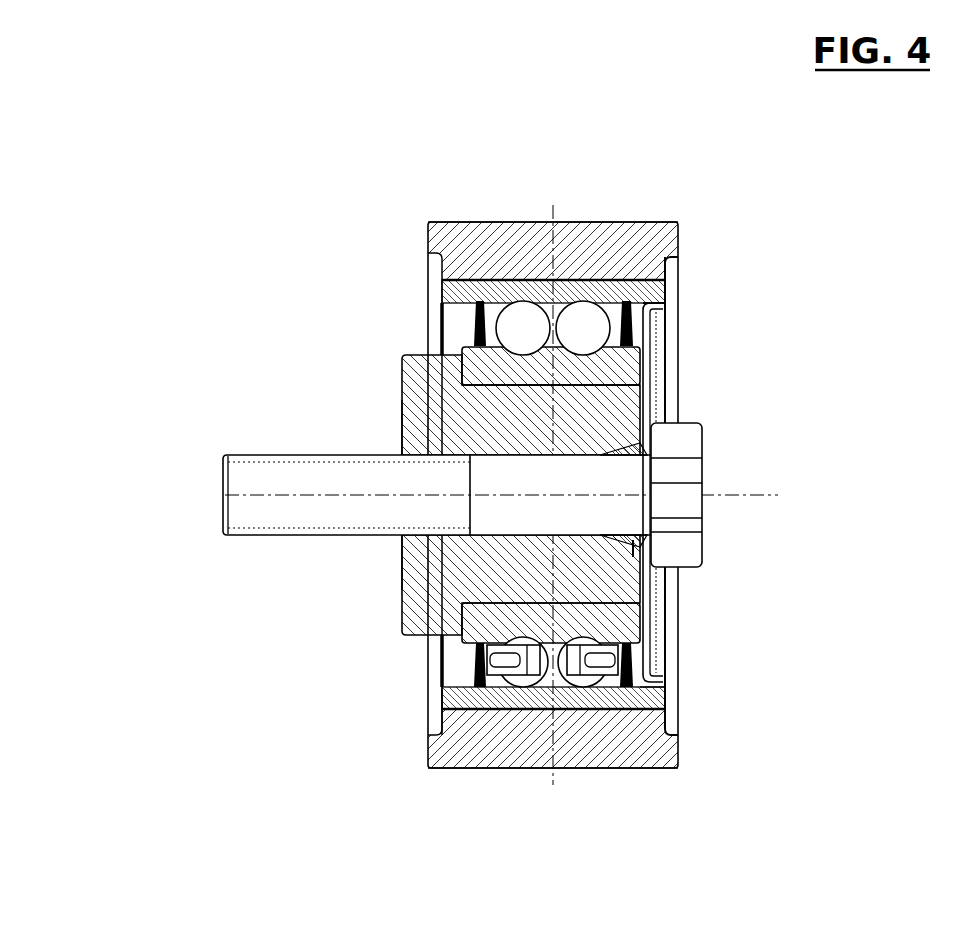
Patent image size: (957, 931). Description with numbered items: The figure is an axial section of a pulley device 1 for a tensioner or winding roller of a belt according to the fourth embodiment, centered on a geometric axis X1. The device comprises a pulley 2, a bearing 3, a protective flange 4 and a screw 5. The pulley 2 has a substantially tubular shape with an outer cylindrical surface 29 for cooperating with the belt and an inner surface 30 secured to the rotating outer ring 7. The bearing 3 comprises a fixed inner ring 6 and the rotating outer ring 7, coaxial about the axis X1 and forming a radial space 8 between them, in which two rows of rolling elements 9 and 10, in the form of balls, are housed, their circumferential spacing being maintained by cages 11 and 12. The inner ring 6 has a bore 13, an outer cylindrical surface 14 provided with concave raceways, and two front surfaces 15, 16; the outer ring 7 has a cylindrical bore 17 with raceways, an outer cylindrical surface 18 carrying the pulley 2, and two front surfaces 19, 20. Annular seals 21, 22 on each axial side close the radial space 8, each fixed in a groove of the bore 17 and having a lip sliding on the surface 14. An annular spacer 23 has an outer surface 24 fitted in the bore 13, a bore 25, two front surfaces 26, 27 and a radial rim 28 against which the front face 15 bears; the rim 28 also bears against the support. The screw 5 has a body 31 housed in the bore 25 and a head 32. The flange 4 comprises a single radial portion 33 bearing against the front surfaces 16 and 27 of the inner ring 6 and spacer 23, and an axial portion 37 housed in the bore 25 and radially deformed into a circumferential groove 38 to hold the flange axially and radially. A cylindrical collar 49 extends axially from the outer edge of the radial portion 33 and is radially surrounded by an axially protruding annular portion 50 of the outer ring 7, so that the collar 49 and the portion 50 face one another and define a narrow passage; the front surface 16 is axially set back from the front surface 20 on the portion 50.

The pulley device 1 is at (278, 345).
The pulley 2 is at (555, 462).
The bearing 3 is at (440, 307).
The protective flange 4 is at (720, 438).
The screw 5 is at (456, 505).
The fixed inner ring 6 is at (477, 396).
The rotating outer ring 7 is at (500, 705).
The radial space 8 is at (548, 283).
The rolling elements 9 is at (515, 342).
The rolling elements 10 is at (570, 342).
The cage 11 is at (478, 758).
The cage 12 is at (573, 708).
The bore 13 is at (480, 403).
The outer cylindrical surface 14 is at (442, 680).
The front surface 15 is at (428, 642).
The front surface 16 is at (668, 628).
The cylindrical bore 17 is at (440, 326).
The outer cylindrical surface 18 is at (500, 258).
The front surface 19 is at (432, 300).
The front surface 20 is at (672, 290).
The annular seal 21 is at (428, 708).
The annular seal 22 is at (645, 712).
The spacer 23 is at (475, 585).
The outer surface 24 is at (462, 627).
The bore 25 is at (430, 486).
The front surface 26 is at (402, 553).
The front surface 27 is at (677, 598).
The radial rim 28 is at (402, 440).
The outer cylindrical surface 29 is at (538, 770).
The inner surface 30 is at (622, 302).
The body 31 is at (224, 472).
The head 32 is at (683, 545).
The radial portion 33 is at (673, 387).
The axial portion 37 is at (600, 483).
The circumferential groove 38 is at (600, 518).
The collar 49 is at (670, 305).
The axially protruding annular portion 50 is at (662, 302).
The geometric axis X1 is at (482, 510).